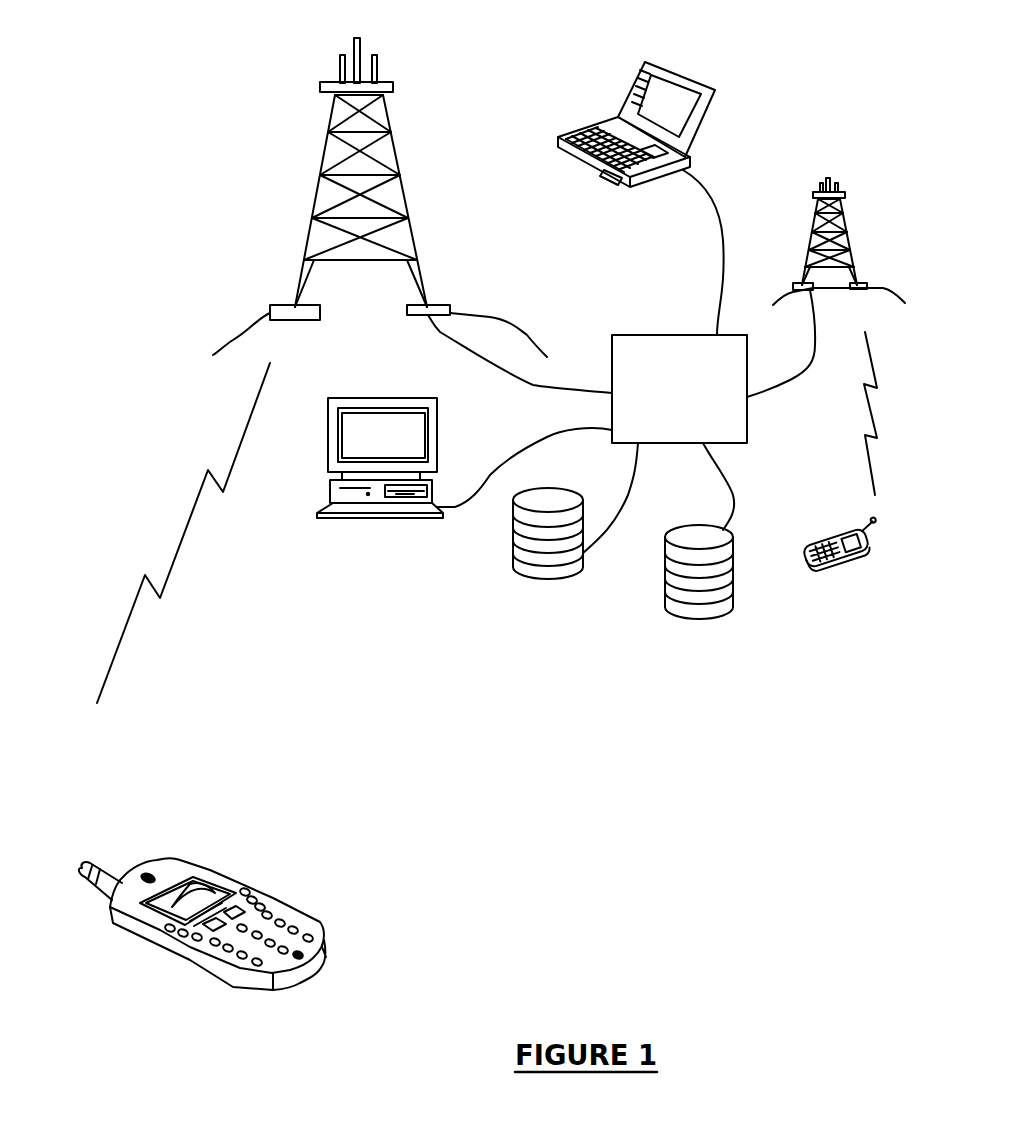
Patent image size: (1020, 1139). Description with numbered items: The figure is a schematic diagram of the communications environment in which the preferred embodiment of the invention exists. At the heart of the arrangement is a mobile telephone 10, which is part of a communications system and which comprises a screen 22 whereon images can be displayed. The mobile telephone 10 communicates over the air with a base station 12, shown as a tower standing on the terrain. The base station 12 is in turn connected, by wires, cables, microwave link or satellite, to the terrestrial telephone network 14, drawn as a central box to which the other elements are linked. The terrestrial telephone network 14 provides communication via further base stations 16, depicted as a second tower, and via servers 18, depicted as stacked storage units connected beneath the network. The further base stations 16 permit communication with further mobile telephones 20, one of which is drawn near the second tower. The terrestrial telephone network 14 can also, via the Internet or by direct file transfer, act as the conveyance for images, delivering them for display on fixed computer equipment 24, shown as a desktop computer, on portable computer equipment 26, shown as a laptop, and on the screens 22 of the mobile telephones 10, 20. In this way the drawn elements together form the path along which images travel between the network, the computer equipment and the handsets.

The mobile telephone 10 is at (202, 884).
The base station 12 is at (418, 243).
The terrestrial telephone network 14 is at (695, 335).
The further base stations 16 is at (855, 258).
The servers 18 is at (562, 577).
The further mobile telephones 20 is at (857, 560).
The screen 22 is at (210, 885).
The fixed computer equipment 24 is at (438, 438).
The portable computer equipment 26 is at (580, 156).